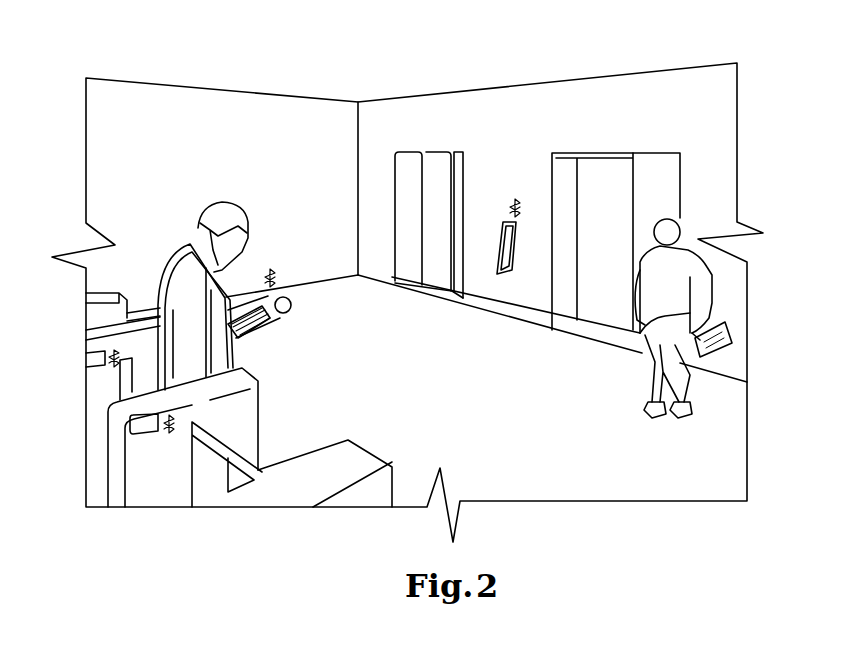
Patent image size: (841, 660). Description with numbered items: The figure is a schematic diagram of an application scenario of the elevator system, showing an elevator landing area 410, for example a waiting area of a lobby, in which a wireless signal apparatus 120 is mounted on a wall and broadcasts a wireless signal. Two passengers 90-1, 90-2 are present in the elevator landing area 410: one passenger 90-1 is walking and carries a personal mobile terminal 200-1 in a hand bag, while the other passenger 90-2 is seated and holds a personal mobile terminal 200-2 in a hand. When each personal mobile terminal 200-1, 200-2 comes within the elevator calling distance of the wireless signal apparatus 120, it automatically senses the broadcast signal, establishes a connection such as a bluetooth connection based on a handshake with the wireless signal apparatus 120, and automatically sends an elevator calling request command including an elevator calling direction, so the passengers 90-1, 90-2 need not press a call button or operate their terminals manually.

The elevator landing area 410 is at (293, 77).
The wireless signal apparatus 120 is at (499, 280).
The passenger 90-2 is at (203, 212).
The passenger 90-1 is at (688, 233).
The personal mobile terminal 200-2 is at (281, 306).
The personal mobile terminal 200-1 is at (712, 358).